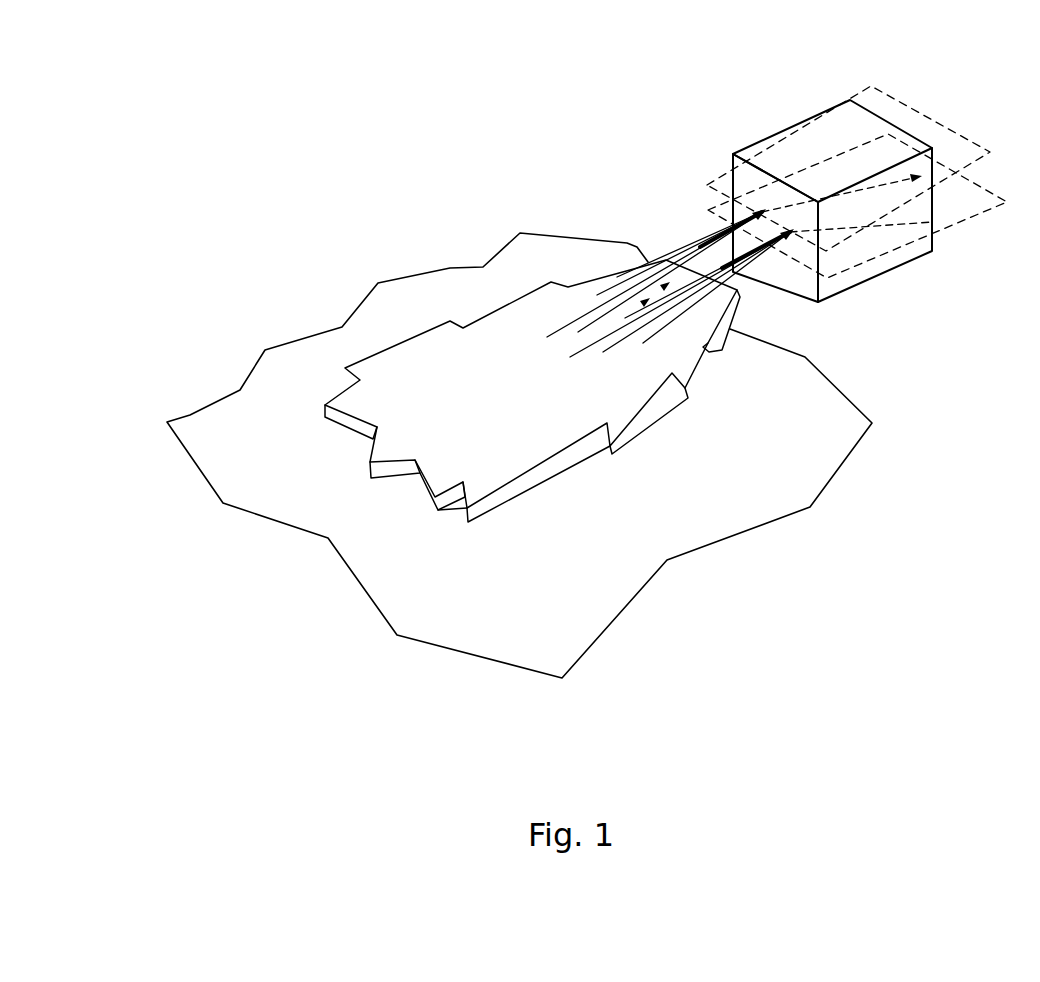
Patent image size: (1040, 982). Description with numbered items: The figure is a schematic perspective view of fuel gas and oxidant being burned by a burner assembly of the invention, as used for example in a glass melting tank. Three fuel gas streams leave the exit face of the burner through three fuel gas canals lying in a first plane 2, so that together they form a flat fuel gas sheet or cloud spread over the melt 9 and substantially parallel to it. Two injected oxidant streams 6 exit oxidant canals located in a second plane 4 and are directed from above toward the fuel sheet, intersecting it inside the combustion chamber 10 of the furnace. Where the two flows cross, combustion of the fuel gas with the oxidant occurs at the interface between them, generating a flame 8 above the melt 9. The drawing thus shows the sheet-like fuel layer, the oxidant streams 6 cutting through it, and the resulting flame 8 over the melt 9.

The first plane 2 is at (953, 222).
The second plane 4 is at (900, 101).
The injected oxidant streams 6 is at (700, 230).
The flame 8 is at (475, 343).
The melt 9 is at (352, 337).
The combustion chamber 10 is at (587, 379).